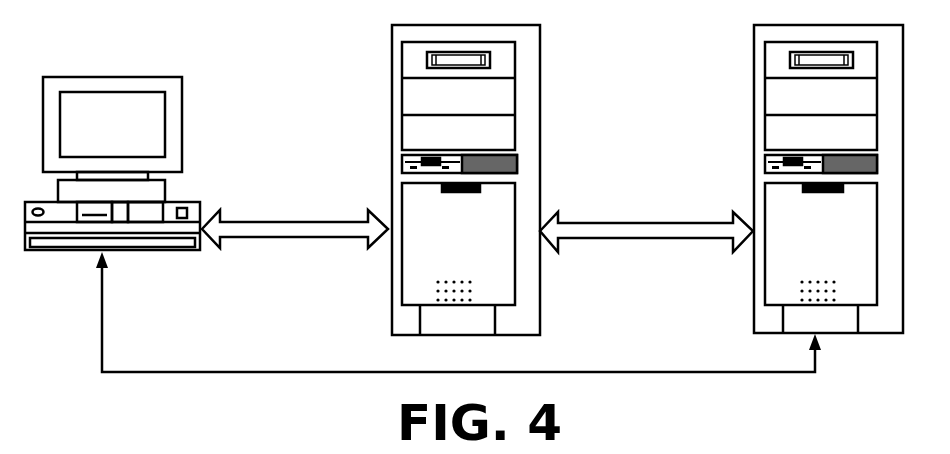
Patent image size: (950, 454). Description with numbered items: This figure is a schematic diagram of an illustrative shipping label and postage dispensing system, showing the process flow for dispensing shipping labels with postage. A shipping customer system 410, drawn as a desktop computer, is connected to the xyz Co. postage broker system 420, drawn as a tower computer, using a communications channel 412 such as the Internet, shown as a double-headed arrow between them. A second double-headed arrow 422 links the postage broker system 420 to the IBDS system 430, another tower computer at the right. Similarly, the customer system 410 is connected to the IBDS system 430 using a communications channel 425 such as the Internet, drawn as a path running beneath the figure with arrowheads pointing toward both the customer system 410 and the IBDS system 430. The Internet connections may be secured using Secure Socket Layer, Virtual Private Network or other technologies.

The shipping customer system 410 is at (133, 77).
The communications channel 412 is at (323, 220).
The postage broker system 420 is at (392, 97).
The communication link 422 is at (680, 225).
The communications channel 425 is at (322, 372).
The IBDS system 430 is at (754, 97).